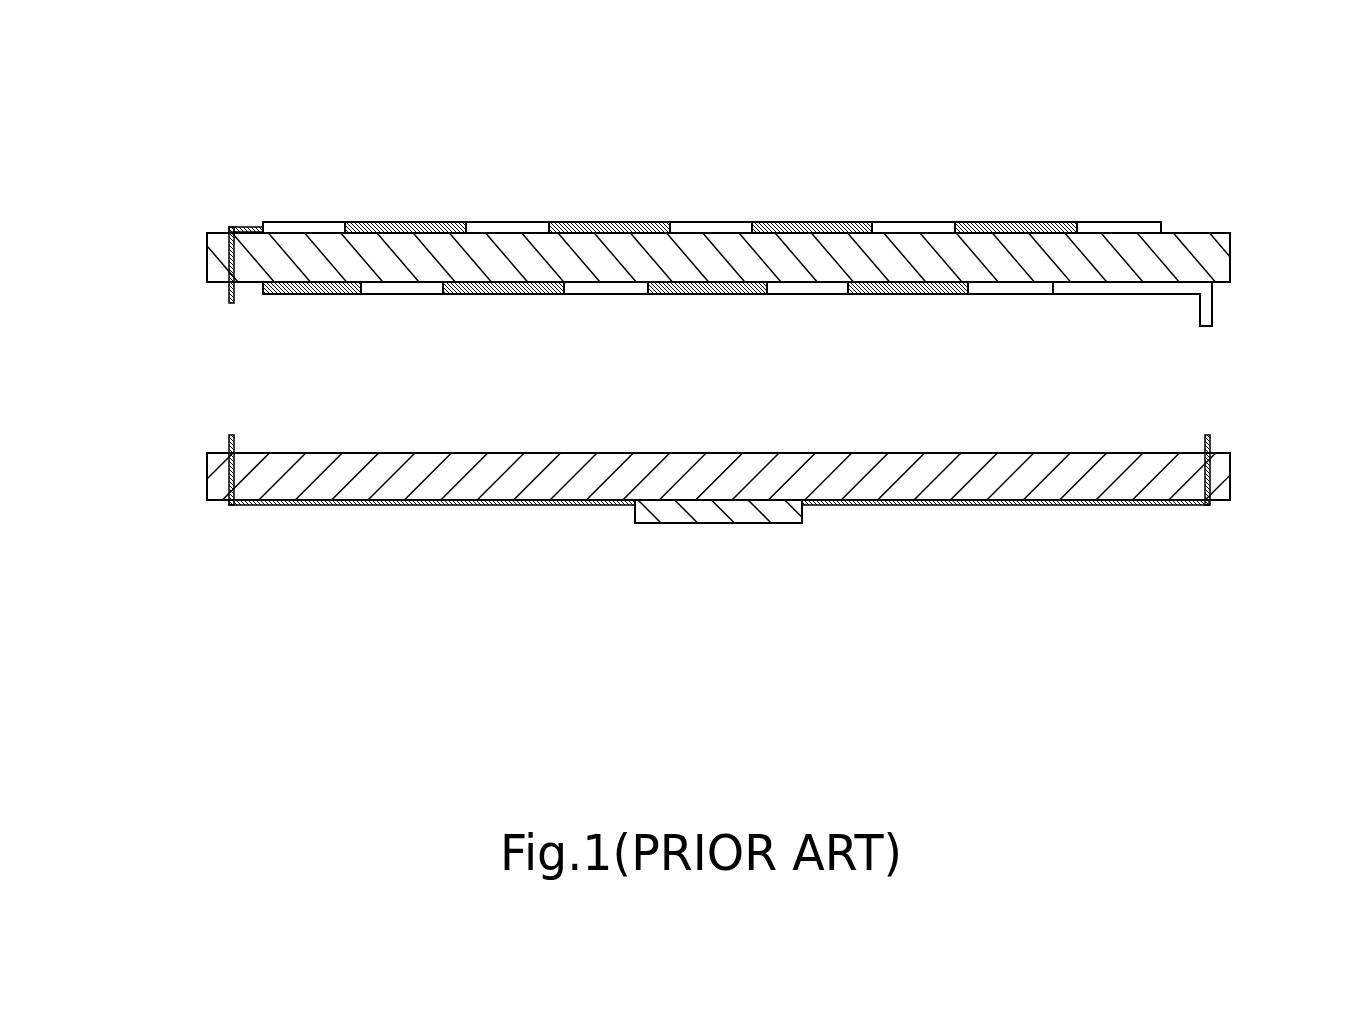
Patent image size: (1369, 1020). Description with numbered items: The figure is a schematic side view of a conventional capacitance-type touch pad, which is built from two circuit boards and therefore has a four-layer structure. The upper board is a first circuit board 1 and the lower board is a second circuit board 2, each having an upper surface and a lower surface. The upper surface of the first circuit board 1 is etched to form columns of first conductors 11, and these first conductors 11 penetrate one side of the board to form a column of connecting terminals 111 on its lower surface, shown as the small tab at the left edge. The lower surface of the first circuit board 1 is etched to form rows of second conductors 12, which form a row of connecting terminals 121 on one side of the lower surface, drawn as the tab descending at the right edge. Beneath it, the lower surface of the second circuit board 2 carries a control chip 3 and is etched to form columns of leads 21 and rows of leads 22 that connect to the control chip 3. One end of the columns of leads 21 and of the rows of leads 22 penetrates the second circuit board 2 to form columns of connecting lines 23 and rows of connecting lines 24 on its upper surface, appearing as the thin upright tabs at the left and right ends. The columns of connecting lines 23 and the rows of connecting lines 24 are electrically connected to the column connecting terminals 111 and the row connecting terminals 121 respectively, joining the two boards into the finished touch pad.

The first circuit board 1 is at (217, 233).
The first conductors 11 is at (407, 223).
The connecting terminals 111 is at (230, 292).
The second conductors 12 is at (312, 293).
The connecting terminals 121 is at (1215, 300).
The second circuit board 2 is at (207, 477).
The columns of leads 21 is at (383, 503).
The rows of leads 22 is at (1055, 502).
The columns of connecting lines 23 is at (230, 440).
The rows of connecting lines 24 is at (1211, 440).
The control chip 3 is at (708, 525).